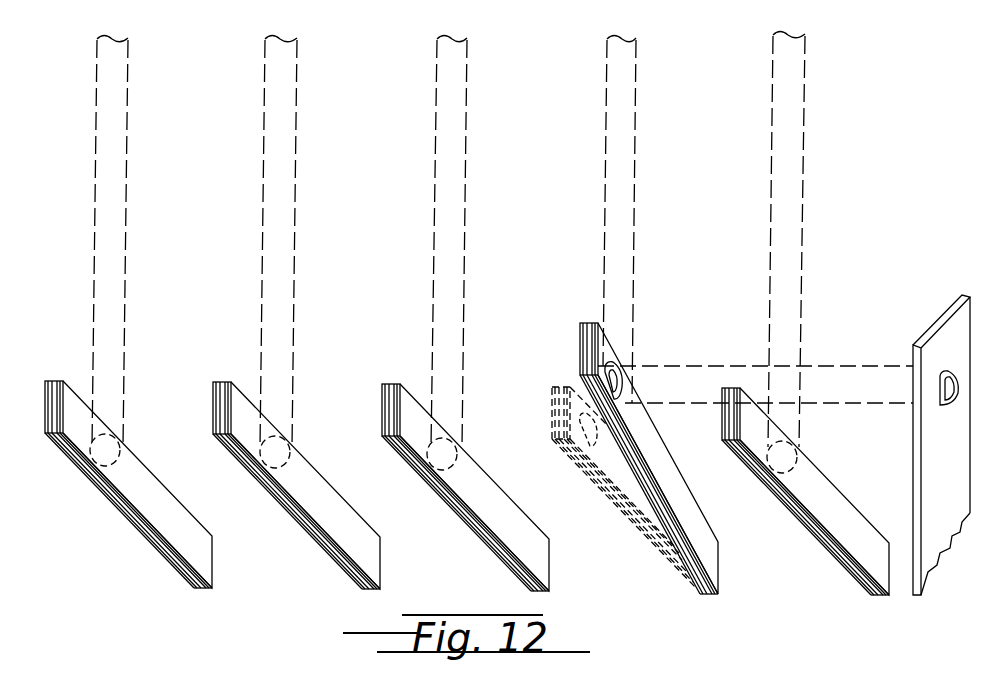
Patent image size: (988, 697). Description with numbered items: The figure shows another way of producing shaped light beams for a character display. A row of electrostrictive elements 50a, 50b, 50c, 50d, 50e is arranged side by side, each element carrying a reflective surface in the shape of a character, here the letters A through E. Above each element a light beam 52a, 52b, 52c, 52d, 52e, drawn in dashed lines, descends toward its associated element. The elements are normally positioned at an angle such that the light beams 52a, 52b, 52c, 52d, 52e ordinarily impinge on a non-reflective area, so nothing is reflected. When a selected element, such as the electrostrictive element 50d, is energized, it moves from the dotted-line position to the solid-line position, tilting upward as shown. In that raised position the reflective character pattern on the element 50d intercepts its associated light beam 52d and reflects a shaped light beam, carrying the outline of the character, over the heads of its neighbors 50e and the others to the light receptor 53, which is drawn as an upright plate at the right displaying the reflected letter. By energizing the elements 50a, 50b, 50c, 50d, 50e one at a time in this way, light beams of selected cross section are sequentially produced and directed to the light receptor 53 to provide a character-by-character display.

The electrostrictive element 50a is at (212, 588).
The electrostrictive element 50b is at (380, 589).
The electrostrictive element 50c is at (549, 591).
The electrostrictive element 50d is at (718, 594).
The electrostrictive element 50e is at (889, 595).
The light beam 52a is at (94, 205).
The light beam 52b is at (262, 212).
The light beam 52c is at (432, 208).
The light beam 52d is at (602, 212).
The light beam 52e is at (770, 228).
The light receptor 53 is at (948, 310).